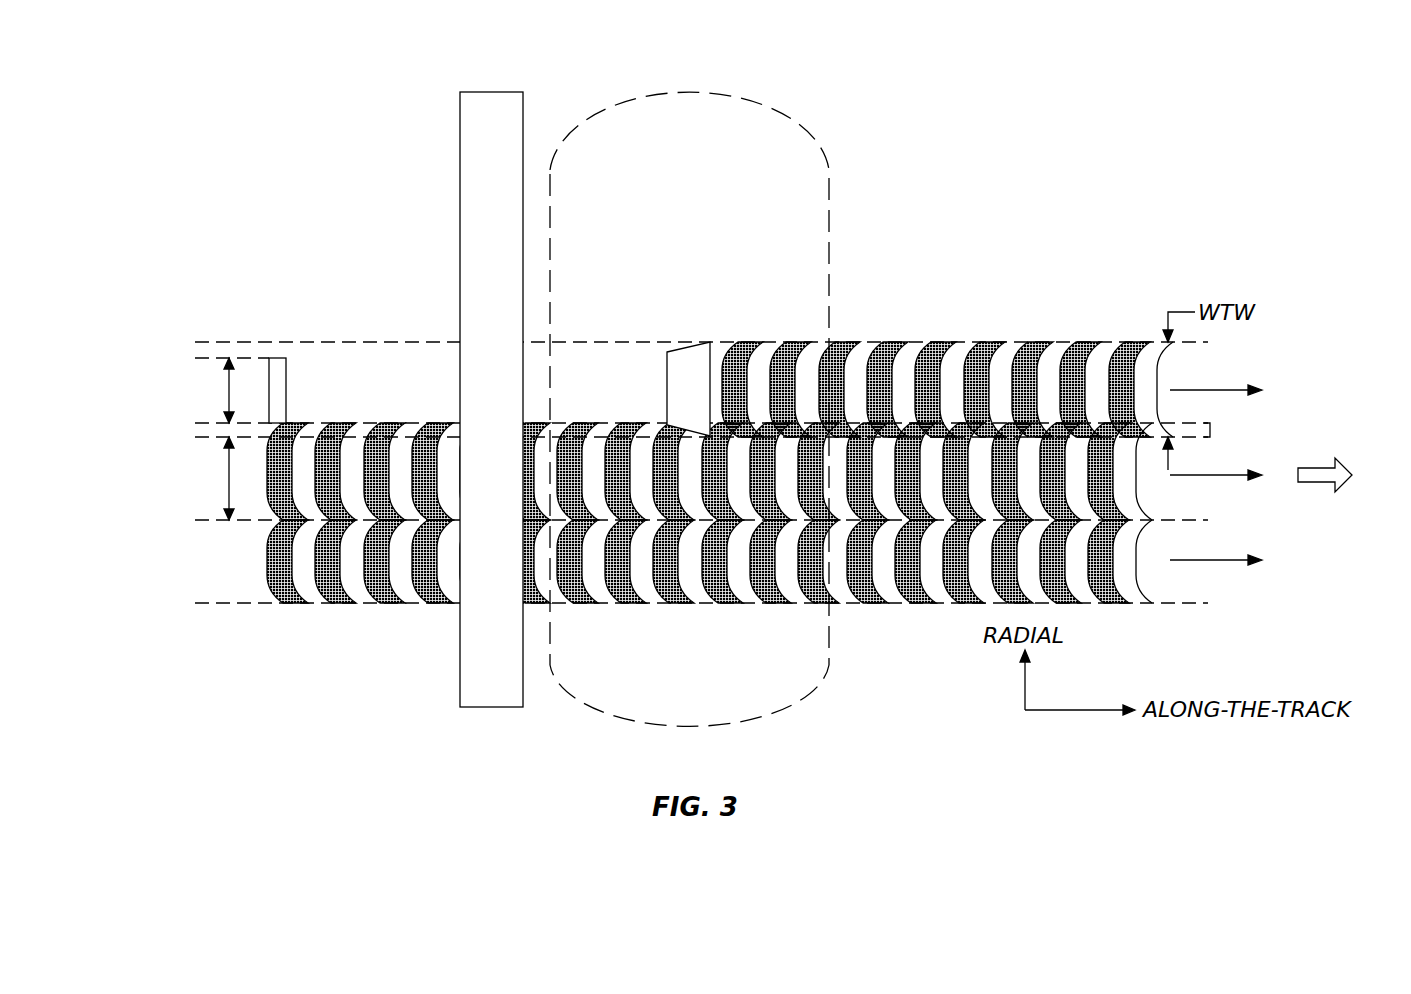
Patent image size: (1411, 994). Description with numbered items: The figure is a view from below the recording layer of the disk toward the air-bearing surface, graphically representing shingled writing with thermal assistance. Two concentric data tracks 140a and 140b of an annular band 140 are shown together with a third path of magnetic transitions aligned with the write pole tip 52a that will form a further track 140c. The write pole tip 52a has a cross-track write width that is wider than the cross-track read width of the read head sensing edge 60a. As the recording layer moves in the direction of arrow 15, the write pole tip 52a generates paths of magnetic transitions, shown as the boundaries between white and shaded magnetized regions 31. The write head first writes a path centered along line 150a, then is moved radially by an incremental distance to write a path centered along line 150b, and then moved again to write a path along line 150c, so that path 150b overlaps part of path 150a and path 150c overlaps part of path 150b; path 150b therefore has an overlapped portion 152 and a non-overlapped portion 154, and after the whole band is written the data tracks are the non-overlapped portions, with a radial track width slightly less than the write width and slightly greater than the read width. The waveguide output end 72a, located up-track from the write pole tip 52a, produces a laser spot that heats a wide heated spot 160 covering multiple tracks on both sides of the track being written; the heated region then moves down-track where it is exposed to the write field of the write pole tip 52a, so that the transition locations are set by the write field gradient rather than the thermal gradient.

The annular band 140 is at (632, 443).
The data track 140a is at (190, 527).
The data track 140b is at (666, 471).
The third data track 140c is at (642, 360).
The magnetized regions 31 is at (897, 343).
The write pole tip 52a is at (700, 348).
The read head sensing edge 60a is at (286, 358).
The waveguide output end 72a is at (472, 138).
The heated spot 160 is at (762, 106).
The path 150a is at (1218, 560).
The path 150b is at (1218, 475).
The path 150c is at (1218, 390).
The overlapped portion 152 is at (1214, 437).
The non-overlapped portion 154 is at (1140, 483).
The arrow 15 is at (1313, 485).